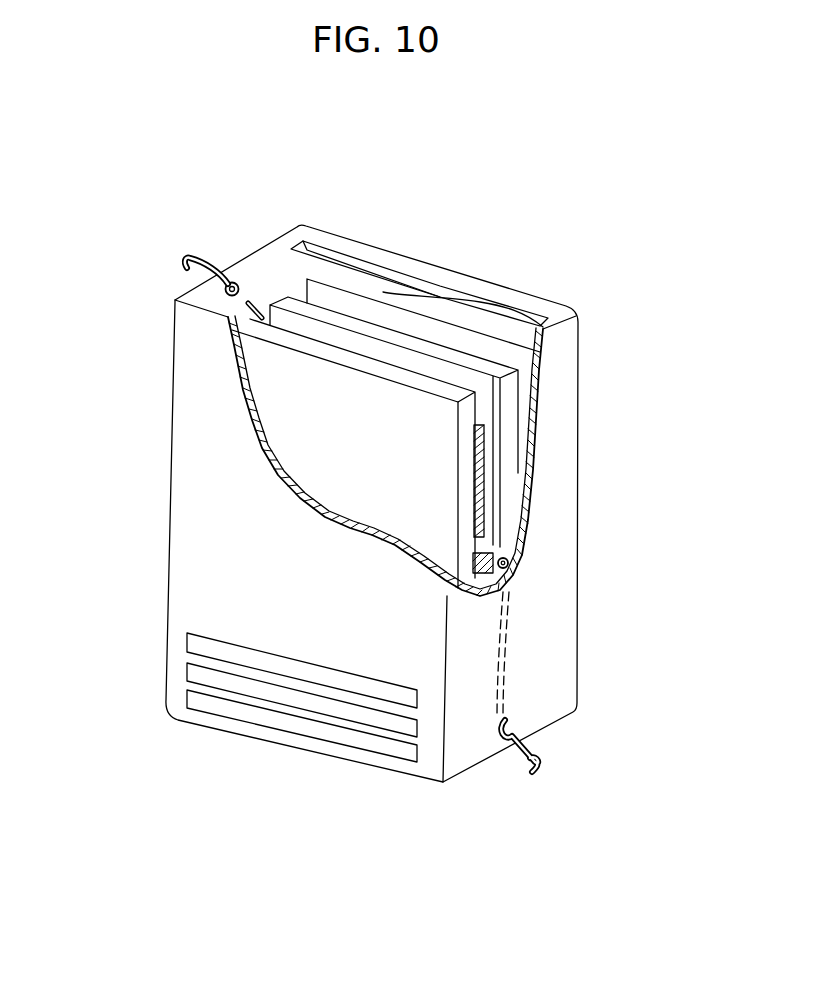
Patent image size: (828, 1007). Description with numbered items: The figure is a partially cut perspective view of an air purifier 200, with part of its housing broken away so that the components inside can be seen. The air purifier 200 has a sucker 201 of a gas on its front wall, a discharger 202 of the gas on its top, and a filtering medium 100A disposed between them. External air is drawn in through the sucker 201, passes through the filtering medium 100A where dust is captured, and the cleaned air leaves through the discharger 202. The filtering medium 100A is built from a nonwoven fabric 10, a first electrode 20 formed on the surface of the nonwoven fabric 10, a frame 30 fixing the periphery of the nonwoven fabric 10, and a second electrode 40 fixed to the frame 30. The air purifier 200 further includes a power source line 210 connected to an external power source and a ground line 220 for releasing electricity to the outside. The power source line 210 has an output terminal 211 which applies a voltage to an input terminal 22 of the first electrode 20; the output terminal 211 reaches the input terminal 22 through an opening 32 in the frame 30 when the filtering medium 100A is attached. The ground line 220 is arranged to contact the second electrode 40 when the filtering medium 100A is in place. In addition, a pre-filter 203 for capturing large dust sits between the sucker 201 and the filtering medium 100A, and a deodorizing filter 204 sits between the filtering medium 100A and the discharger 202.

The nonwoven fabric 10 is at (479, 412).
The first electrode 20 is at (480, 524).
The input terminal 22 is at (481, 577).
The frame 30 is at (283, 298).
The opening 32 is at (513, 573).
The second electrode 40 is at (255, 331).
The filtering medium 100A is at (505, 481).
The air purifier 200 is at (518, 178).
The sucker 201 is at (143, 628).
The discharger 202 is at (335, 258).
The pre-filter 203 is at (297, 423).
The deodorizing filter 204 is at (530, 361).
The power source line 210 is at (517, 764).
The output terminal 211 is at (510, 610).
The ground line 220 is at (207, 257).